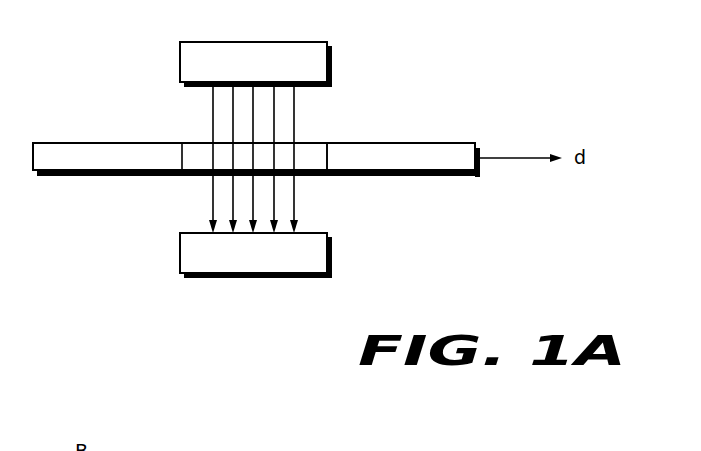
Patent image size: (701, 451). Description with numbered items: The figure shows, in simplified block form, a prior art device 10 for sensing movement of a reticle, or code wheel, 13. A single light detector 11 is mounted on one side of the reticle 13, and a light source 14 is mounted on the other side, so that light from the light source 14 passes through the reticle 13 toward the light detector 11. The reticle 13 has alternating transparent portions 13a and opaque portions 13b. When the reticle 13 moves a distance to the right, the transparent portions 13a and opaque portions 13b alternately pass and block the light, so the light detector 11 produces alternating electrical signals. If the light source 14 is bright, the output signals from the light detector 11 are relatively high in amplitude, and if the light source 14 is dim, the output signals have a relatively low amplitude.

The prior art device 10 is at (517, 260).
The light detector 11 is at (210, 278).
The reticle 13 is at (256, 152).
The transparent portions 13a is at (193, 165).
The opaque portions 13b is at (391, 165).
The light source 14 is at (203, 41).